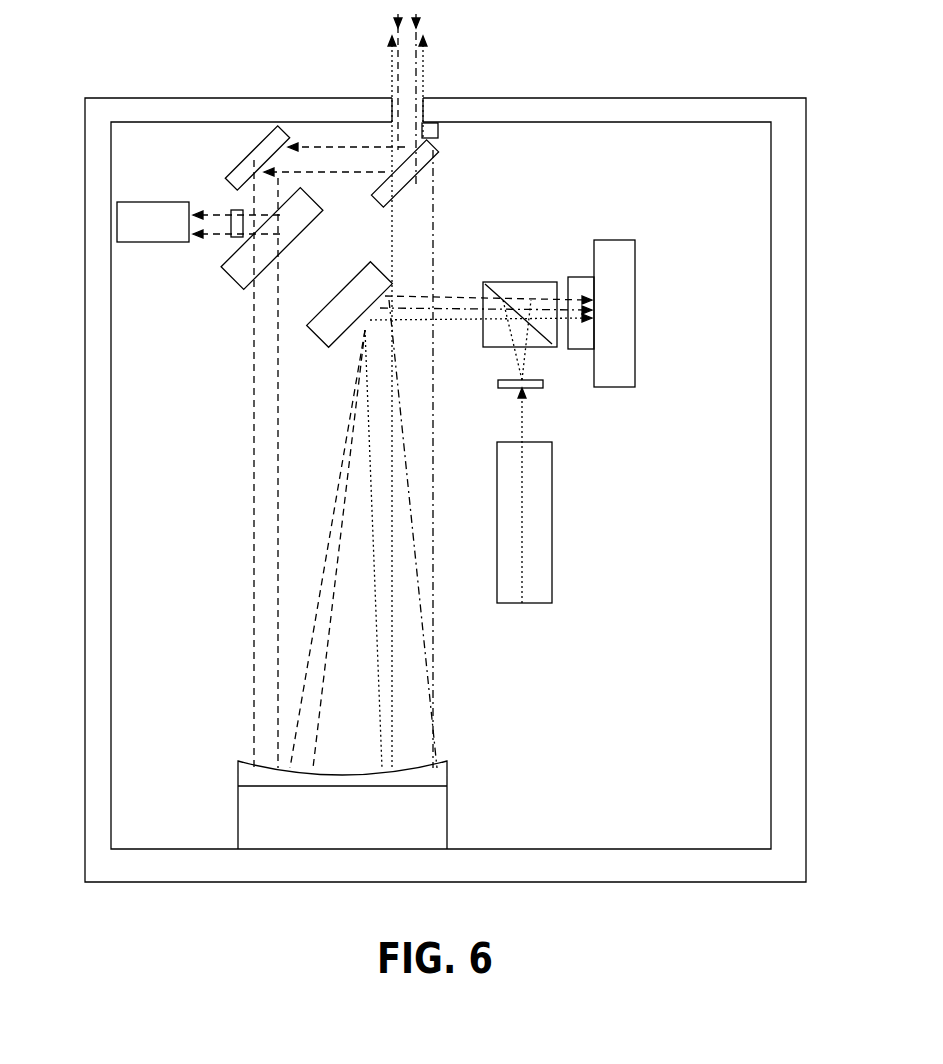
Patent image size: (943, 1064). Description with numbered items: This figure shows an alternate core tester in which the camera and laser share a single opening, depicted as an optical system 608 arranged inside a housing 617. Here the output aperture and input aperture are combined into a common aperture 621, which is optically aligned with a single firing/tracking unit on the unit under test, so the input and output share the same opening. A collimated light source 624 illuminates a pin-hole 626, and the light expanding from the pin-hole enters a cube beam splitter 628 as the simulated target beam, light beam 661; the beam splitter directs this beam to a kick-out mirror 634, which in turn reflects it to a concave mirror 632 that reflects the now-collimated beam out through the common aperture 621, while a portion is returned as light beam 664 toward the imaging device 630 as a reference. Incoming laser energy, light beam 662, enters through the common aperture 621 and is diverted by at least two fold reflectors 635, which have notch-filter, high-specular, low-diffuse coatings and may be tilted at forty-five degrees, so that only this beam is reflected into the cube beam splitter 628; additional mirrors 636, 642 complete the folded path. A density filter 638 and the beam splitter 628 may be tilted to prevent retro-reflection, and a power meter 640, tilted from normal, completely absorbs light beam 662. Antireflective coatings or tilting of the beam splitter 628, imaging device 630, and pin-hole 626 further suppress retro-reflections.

The optical system 608 is at (133, 56).
The housing 617 is at (806, 428).
The common aperture 621 is at (408, 100).
The light source 624 is at (524, 522).
The pin-hole 626 is at (520, 380).
The cube beam splitter 628 is at (510, 282).
The imaging device 630 is at (608, 240).
The concave mirror 632 is at (238, 768).
The mirror 634 is at (328, 348).
The fold reflectors 635 is at (380, 188).
The mirror 636 is at (236, 286).
The density filter 638 is at (238, 208).
The power meter 640 is at (157, 243).
The mirror 642 is at (440, 134).
The light beam 661 is at (520, 352).
The light beam 662 is at (277, 422).
The light beam 664 is at (430, 250).